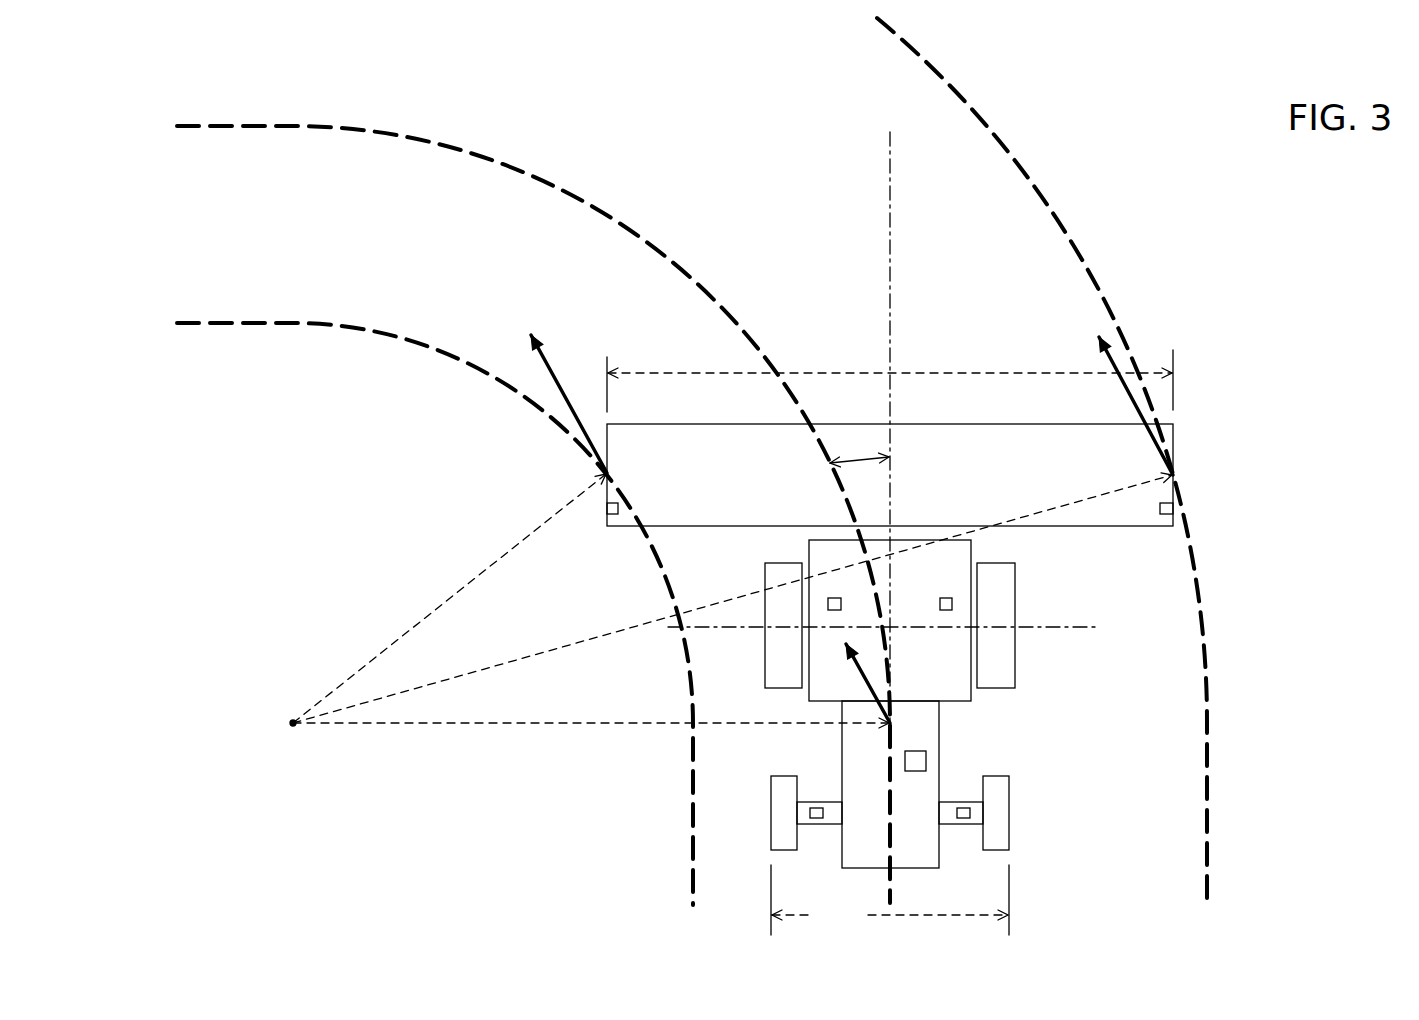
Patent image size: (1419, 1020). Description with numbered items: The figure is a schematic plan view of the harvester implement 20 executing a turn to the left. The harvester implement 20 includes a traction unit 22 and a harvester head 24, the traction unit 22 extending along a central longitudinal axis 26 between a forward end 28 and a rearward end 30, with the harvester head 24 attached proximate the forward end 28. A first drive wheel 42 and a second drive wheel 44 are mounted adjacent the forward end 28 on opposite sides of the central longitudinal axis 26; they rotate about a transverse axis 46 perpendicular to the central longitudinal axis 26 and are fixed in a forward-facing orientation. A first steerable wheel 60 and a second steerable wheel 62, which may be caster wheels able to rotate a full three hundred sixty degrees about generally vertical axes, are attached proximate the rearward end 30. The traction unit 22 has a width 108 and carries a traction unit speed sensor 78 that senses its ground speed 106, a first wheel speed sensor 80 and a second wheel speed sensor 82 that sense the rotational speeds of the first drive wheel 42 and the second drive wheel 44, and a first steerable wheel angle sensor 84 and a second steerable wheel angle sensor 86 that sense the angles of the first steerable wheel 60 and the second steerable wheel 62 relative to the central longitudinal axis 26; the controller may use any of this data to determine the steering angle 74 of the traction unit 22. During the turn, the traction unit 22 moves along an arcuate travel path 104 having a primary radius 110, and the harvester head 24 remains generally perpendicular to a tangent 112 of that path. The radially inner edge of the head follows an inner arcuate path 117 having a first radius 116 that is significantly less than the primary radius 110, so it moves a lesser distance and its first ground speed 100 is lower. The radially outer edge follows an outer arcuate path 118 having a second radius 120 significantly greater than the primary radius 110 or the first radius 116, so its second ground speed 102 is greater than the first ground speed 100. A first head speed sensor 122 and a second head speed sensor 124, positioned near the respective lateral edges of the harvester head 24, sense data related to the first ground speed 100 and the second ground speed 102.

The harvester implement 20 is at (1127, 786).
The traction unit 22 is at (939, 780).
The harvester head 24 is at (983, 424).
The central longitudinal axis 26 is at (937, 427).
The forward end 28 is at (912, 541).
The rearward end 30 is at (903, 869).
The first drive wheel 42 is at (785, 652).
The second drive wheel 44 is at (1015, 672).
The transverse axis 46 is at (1090, 628).
The first steerable wheel 60 is at (785, 815).
The second steerable wheel 62 is at (1009, 815).
The steering angle 74 is at (860, 452).
The traction unit speed sensor 78 is at (913, 759).
The first wheel speed sensor 80 is at (832, 598).
The second wheel speed sensor 82 is at (946, 611).
The first steerable wheel angle sensor 84 is at (818, 820).
The second steerable wheel angle sensor 86 is at (965, 820).
The first ground speed 100 is at (557, 372).
The second ground speed 102 is at (1120, 388).
The arcuate travel path 104 is at (660, 246).
The ground speed 106 is at (857, 668).
The width 108 is at (890, 900).
The primary radius 110 is at (488, 726).
The tangent 112 is at (890, 243).
The first radius 116 is at (390, 645).
The inner path boundary 117 is at (485, 378).
The outer arcuate path 118 is at (1065, 218).
The second radius 120 is at (513, 660).
The first head speed sensor 122 is at (612, 508).
The second head speed sensor 124 is at (1160, 510).